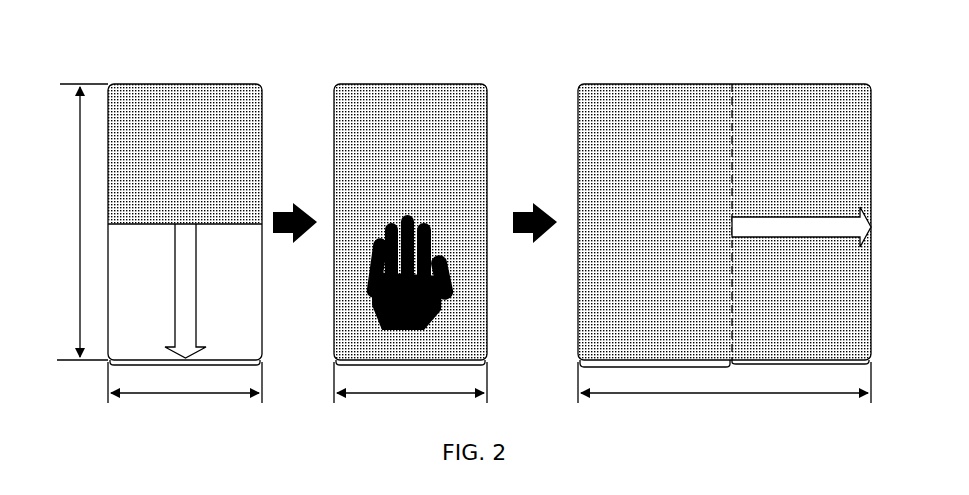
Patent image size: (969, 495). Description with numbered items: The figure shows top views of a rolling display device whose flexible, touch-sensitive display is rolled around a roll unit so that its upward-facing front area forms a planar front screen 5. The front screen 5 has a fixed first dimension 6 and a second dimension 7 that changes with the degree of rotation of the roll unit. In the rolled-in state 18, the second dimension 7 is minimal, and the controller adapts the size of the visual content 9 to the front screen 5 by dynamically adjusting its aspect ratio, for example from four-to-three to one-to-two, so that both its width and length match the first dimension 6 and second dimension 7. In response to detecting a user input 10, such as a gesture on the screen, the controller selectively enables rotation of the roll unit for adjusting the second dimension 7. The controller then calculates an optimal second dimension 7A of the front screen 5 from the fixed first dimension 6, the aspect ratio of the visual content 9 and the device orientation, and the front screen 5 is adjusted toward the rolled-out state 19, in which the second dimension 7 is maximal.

The front screen 5 is at (238, 299).
The first dimension 6 is at (82, 222).
The second dimension 7 is at (297, 382).
The optimal second dimension 7A is at (724, 382).
The visual content 9 is at (180, 95).
The user input 10 is at (430, 316).
The rolled-in state 18 is at (105, 73).
The rolled-out state 19 is at (577, 73).